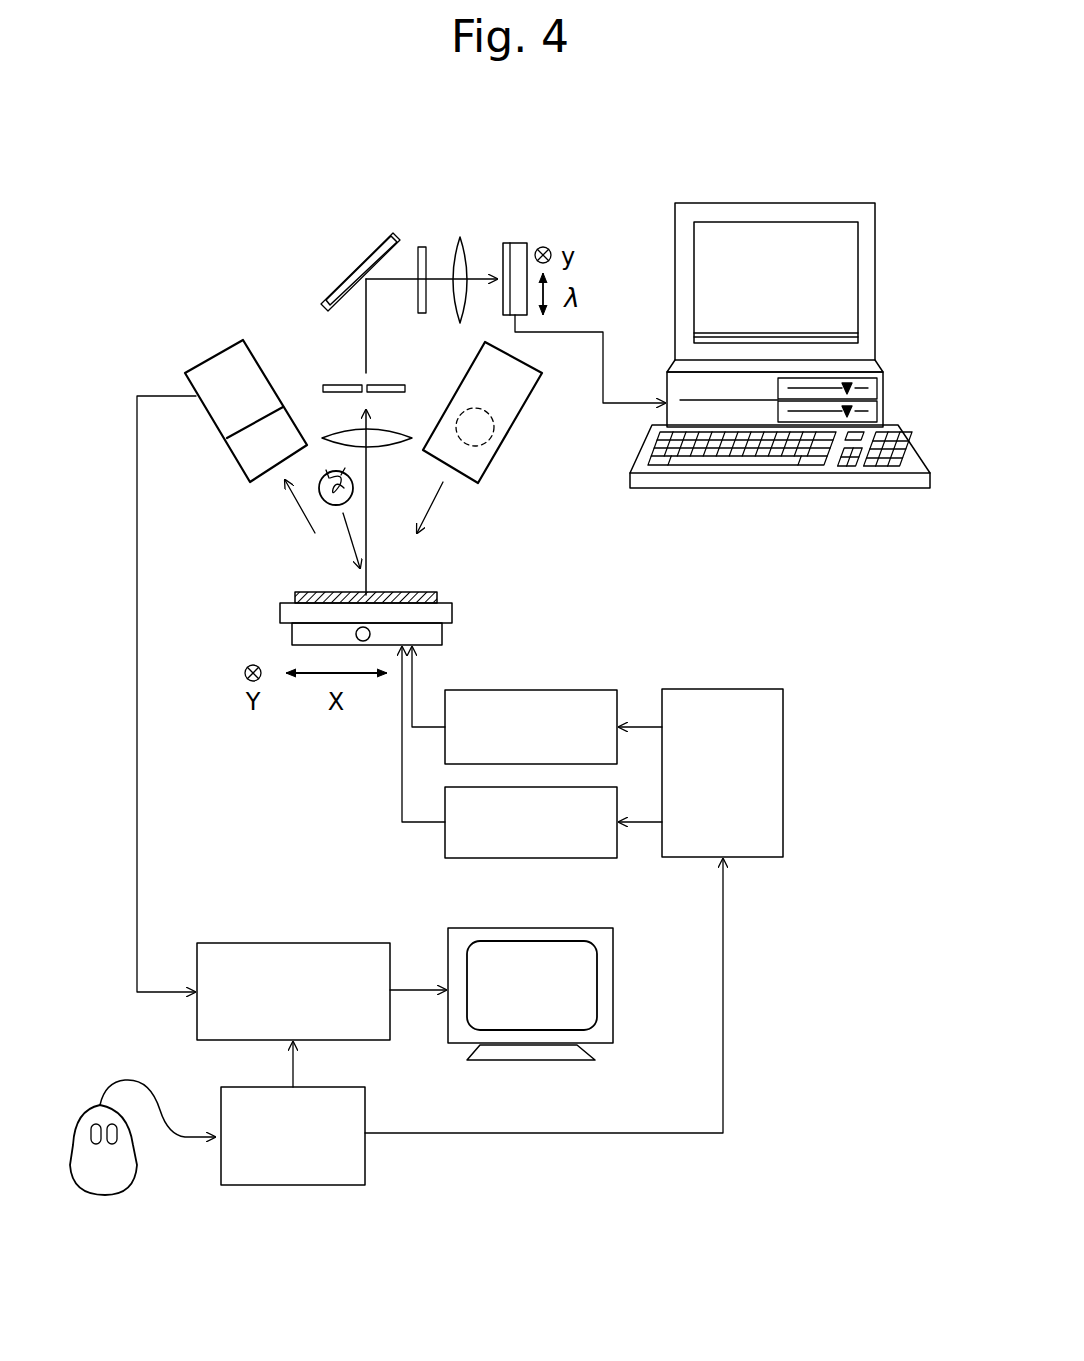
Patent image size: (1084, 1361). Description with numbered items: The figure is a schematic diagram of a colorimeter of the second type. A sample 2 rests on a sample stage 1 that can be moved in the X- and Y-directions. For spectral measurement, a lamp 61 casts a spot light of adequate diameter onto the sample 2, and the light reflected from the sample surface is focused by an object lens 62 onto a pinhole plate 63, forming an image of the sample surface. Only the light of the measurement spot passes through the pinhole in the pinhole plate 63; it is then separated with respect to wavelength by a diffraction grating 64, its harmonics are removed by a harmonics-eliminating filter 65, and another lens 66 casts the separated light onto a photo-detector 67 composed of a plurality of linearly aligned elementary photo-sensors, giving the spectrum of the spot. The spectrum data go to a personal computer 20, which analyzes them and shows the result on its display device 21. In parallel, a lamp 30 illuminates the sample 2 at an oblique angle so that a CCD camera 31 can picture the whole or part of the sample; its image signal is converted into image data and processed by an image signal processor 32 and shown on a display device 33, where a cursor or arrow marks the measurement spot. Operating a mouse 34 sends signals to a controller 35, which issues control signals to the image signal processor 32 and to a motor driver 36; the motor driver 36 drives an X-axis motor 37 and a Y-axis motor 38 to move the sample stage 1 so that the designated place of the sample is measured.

The sample stage 1 is at (292, 633).
The sample 2 is at (430, 592).
The personal computer 20 is at (880, 397).
The display device 21 is at (773, 202).
The lamp 30 is at (515, 426).
The CCD camera 31 is at (211, 358).
The image signal processor 32 is at (295, 942).
The display device 33 is at (528, 1062).
The mouse 34 is at (108, 1196).
The controller 35 is at (290, 1186).
The motor driver 36 is at (783, 770).
The X-axis motor 37 is at (543, 689).
The Y-axis motor 38 is at (533, 859).
The lamp 61 is at (308, 520).
The object lens 62 is at (383, 447).
The pinhole plate 63 is at (392, 383).
The diffraction grating 64 is at (352, 280).
The harmonics-eliminating filter 65 is at (420, 245).
The lens 66 is at (460, 237).
The photo-detector 67 is at (515, 242).